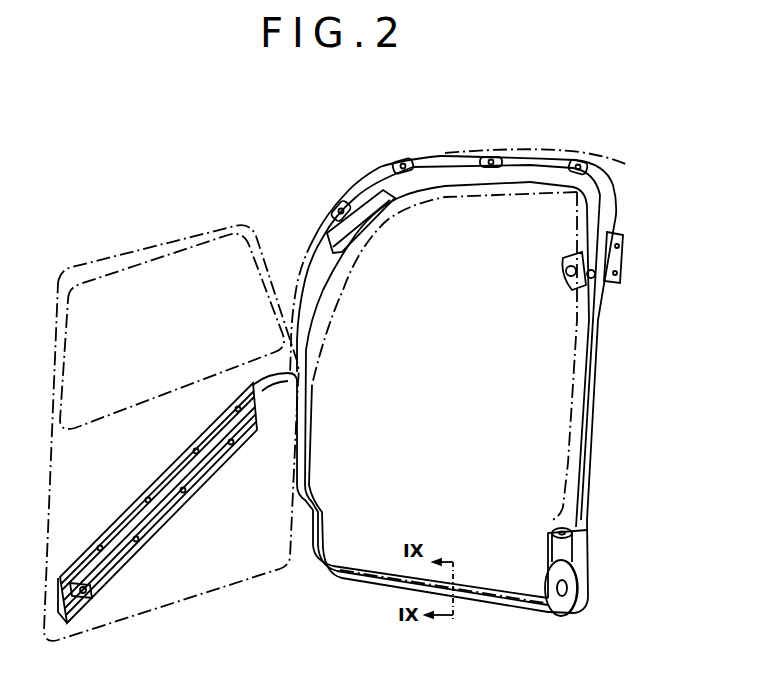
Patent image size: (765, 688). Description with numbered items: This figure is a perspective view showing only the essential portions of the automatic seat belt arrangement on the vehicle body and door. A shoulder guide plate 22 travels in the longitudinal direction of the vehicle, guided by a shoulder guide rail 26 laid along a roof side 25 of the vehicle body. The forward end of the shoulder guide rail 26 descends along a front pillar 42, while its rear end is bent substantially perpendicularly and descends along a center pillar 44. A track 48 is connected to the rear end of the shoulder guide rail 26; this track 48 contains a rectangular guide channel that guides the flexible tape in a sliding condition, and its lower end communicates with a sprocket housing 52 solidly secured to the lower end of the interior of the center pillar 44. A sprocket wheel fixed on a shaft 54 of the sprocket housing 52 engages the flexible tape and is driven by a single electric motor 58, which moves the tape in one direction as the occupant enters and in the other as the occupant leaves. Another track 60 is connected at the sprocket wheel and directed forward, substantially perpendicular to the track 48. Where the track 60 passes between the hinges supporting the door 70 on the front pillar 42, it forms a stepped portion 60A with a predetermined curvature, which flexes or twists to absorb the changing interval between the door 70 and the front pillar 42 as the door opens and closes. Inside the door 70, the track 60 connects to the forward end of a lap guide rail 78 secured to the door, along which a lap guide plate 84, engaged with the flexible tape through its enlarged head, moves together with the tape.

The shoulder guide plate 22 is at (580, 258).
The roof side 25 is at (541, 150).
The shoulder guide rail 26 is at (506, 180).
The front pillar 42 is at (313, 258).
The center pillar 44 is at (572, 310).
The track 48 is at (590, 390).
The sprocket housing 52 is at (568, 577).
The shaft 54 is at (561, 597).
The electric motor 58 is at (558, 525).
The track 60 is at (497, 603).
The stepped portion 60A is at (306, 450).
The door 70 is at (230, 566).
The lap guide rail 78 is at (162, 483).
The lap guide plate 84 is at (95, 592).